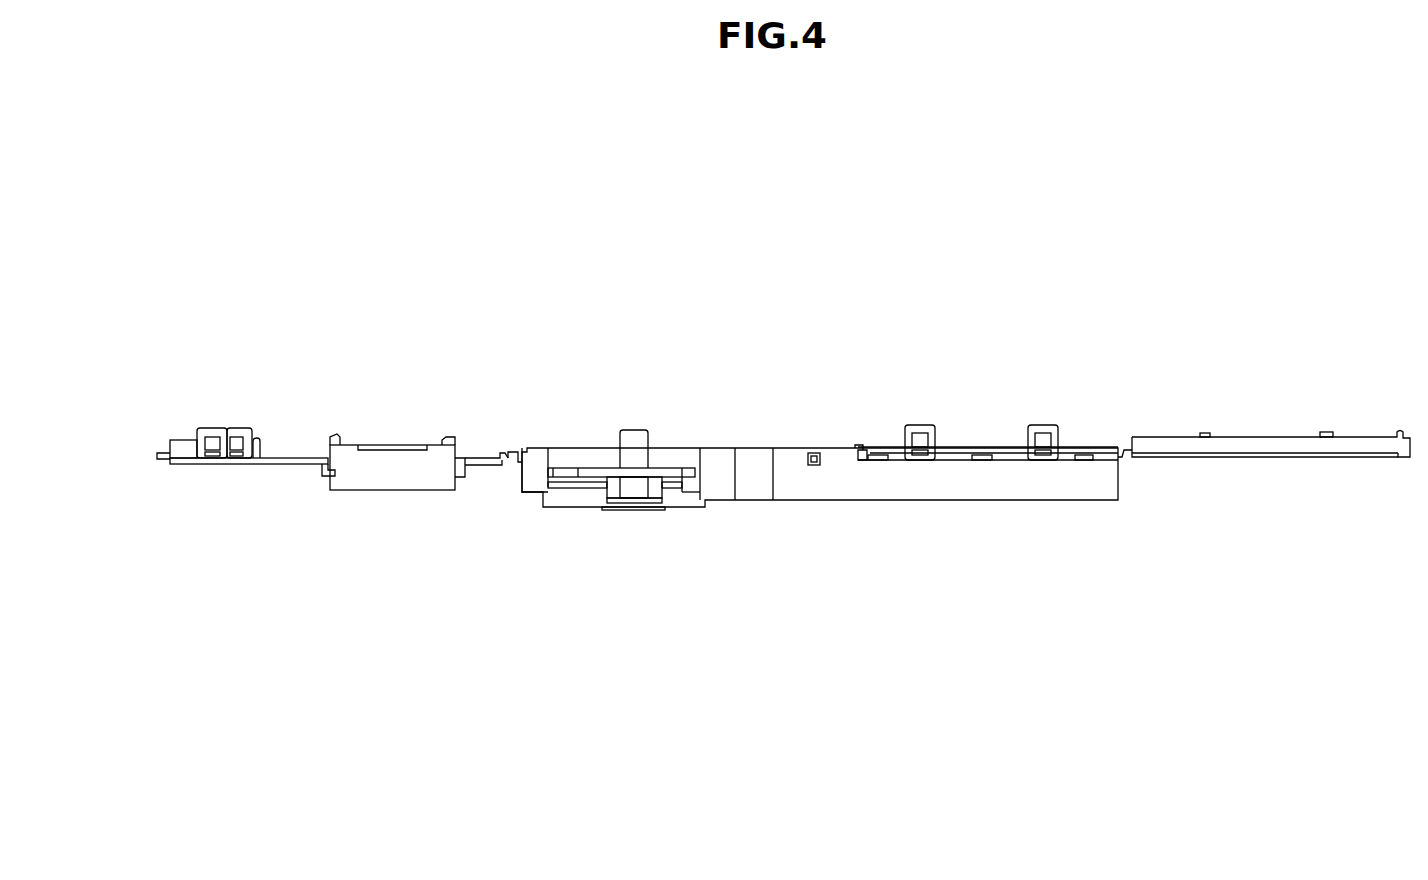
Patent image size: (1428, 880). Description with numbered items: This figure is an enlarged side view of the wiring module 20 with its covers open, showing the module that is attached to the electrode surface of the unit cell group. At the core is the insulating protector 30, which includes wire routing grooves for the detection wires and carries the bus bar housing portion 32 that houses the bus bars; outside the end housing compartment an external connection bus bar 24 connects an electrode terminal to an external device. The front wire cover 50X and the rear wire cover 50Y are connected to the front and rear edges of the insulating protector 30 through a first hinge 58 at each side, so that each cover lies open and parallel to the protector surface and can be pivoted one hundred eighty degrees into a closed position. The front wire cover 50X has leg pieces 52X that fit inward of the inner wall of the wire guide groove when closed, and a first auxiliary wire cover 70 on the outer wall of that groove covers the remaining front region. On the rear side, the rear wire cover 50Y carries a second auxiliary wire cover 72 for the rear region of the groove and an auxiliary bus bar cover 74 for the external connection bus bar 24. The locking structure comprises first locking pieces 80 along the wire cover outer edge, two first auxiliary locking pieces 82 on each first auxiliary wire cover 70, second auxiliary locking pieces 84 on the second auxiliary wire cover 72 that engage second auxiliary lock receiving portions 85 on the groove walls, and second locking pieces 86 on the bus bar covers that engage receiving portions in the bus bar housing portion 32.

The wiring module 20 is at (740, 402).
The external connection bus bar 24 is at (652, 470).
The insulating protector 30 is at (752, 503).
The bus bar housing portion 32 is at (538, 455).
The front wire cover 50X is at (1320, 460).
The rear wire cover 50Y is at (305, 458).
The leg piece of the front wire cover 52X is at (1233, 437).
The first hinge 58 is at (512, 452).
The first auxiliary wire cover 70 is at (1007, 447).
The second auxiliary wire cover 72 is at (184, 465).
The auxiliary bus bar cover 74 is at (383, 482).
The first locking piece 80 is at (1410, 432).
The first auxiliary locking piece 82 is at (915, 425).
The second auxiliary locking piece 84 is at (213, 428).
The second auxiliary lock receiving portion 85 is at (815, 466).
The second locking piece 86 is at (1322, 432).